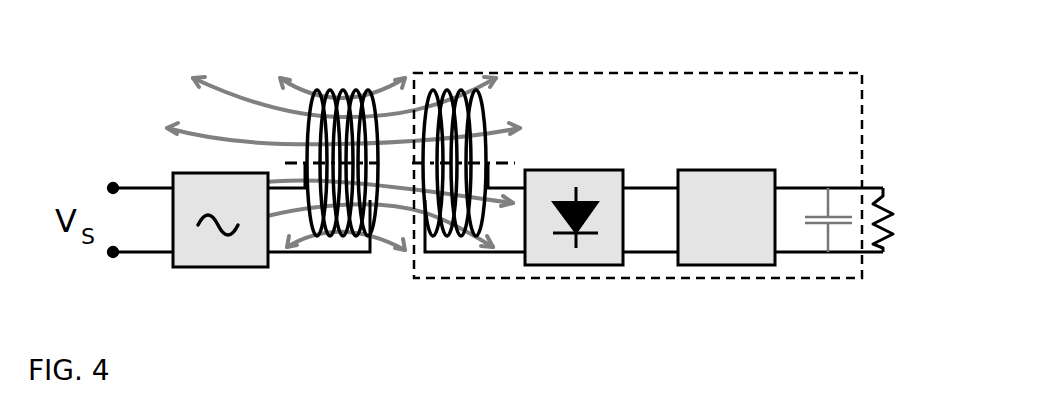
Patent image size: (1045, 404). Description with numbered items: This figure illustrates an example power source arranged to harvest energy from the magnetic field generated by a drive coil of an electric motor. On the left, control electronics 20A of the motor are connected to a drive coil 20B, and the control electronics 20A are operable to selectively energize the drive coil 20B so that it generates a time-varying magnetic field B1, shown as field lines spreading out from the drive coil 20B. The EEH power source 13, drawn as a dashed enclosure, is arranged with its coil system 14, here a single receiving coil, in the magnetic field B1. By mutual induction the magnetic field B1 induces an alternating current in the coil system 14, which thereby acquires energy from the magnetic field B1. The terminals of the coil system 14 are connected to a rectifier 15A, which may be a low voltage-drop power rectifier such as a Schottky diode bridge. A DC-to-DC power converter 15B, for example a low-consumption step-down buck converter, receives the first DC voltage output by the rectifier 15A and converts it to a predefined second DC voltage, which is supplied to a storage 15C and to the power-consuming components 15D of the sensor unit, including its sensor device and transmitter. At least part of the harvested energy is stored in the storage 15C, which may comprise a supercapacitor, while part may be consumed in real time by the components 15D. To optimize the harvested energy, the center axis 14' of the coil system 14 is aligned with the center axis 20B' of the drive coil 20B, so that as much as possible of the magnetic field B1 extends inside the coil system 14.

The EEH power source 13 is at (665, 72).
The coil system 14 is at (454, 124).
The center axis 14' is at (510, 174).
The rectifier 15A is at (575, 265).
The DC-to-DC power converter 15B is at (722, 265).
The storage 15C is at (820, 215).
The power-consuming components 15D is at (893, 217).
The control electronics 20A is at (230, 267).
The drive coil 20B is at (342, 124).
The center axis 20B' is at (245, 148).
The magnetic field B1 is at (449, 164).